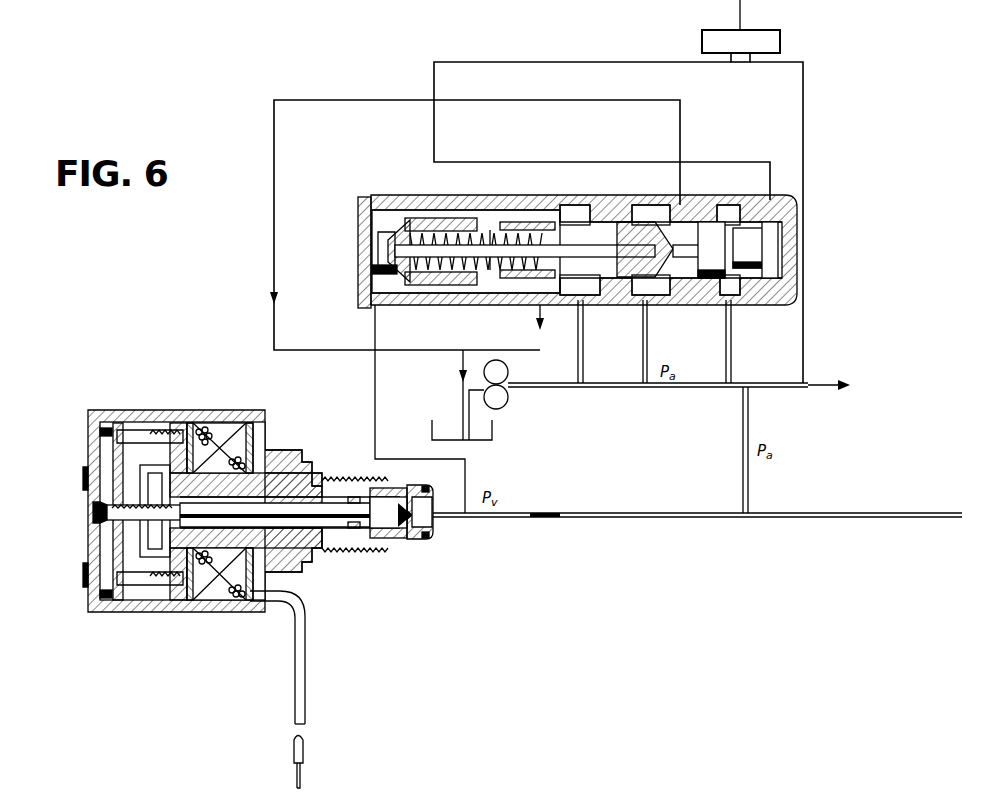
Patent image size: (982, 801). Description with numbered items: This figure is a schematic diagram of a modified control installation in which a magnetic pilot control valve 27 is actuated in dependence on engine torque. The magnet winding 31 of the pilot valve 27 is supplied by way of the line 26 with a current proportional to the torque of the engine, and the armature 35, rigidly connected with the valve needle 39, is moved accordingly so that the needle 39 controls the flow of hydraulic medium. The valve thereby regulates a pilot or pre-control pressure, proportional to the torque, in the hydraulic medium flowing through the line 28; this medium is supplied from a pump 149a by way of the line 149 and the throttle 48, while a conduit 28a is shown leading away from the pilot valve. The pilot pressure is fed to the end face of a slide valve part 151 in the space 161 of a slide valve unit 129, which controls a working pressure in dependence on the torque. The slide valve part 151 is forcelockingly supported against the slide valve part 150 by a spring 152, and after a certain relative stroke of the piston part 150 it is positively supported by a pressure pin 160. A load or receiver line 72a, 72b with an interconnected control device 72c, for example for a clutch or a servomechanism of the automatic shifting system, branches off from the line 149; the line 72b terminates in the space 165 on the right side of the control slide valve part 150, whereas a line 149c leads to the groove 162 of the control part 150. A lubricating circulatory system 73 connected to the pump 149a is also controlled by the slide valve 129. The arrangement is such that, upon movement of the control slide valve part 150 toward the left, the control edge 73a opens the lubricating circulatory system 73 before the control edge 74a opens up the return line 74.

The control device 72c is at (702, 38).
The load or receiver line 72b is at (708, 62).
The load or receiver line 72a is at (775, 62).
The lubricating circulatory system 73 is at (376, 100).
The slide valve unit 129 is at (545, 205).
The space 161 is at (378, 262).
The slide valve part 151 is at (420, 218).
The spring 152 is at (505, 222).
The pressure pin 160 is at (465, 260).
The slide valve part 150 is at (712, 278).
The groove 162 is at (725, 290).
The space 165 is at (770, 280).
The control edge 74a is at (552, 290).
The return line 74 is at (578, 360).
The control edge 73a is at (650, 290).
The line 149c is at (731, 368).
The line 149 is at (730, 390).
The pump 149a is at (508, 397).
The return conduit 28a is at (375, 383).
The line 28 is at (448, 517).
The throttle 48 is at (545, 517).
The magnetic pilot control valve 27 is at (140, 410).
The magnetic winding 31 is at (222, 600).
The armature 35 is at (155, 600).
The valve needle 39 is at (330, 505).
The line 26 is at (305, 685).